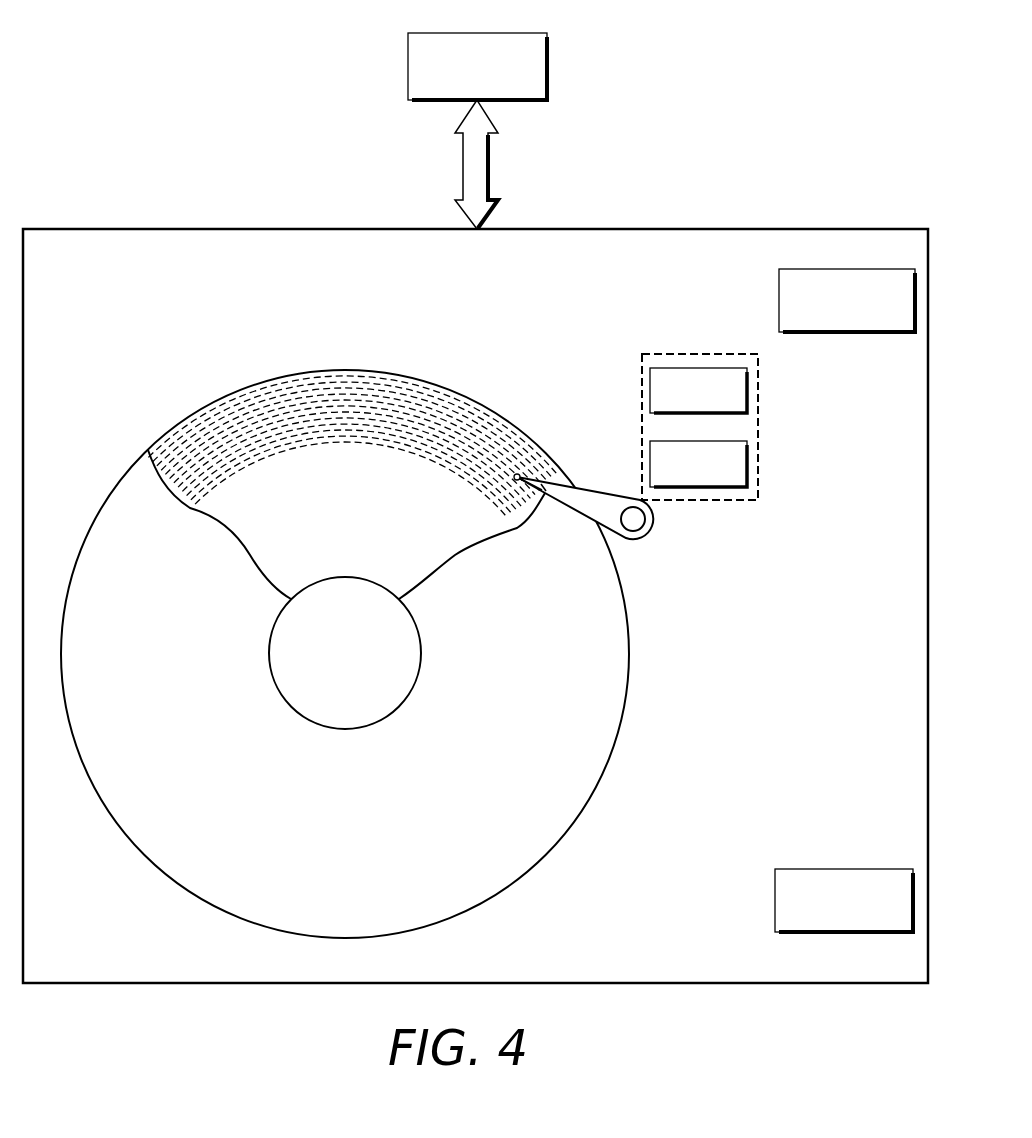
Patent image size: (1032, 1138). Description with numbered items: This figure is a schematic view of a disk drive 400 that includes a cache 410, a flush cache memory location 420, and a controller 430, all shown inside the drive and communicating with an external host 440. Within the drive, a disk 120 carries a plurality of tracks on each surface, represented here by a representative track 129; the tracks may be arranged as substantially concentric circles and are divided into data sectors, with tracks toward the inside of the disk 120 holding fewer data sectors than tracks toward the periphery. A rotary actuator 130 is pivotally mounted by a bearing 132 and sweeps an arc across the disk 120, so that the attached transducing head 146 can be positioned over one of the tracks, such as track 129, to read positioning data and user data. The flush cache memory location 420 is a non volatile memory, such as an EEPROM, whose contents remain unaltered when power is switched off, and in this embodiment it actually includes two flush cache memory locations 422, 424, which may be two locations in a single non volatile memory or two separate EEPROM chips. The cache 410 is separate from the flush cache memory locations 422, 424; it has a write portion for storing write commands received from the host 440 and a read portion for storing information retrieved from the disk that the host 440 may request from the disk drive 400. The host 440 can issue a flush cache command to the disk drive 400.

The disk drive 400 is at (175, 228).
The cache 410 is at (790, 868).
The flush cache memory location 420 is at (657, 353).
The flush cache memory location 422 is at (650, 390).
The flush cache memory location 424 is at (650, 462).
The controller 430 is at (793, 268).
The host 440 is at (532, 33).
The disk 120 is at (120, 494).
The track 129 is at (440, 395).
The rotary actuator 130 is at (568, 515).
The bearing 132 is at (647, 518).
The transducing head 146 is at (518, 474).